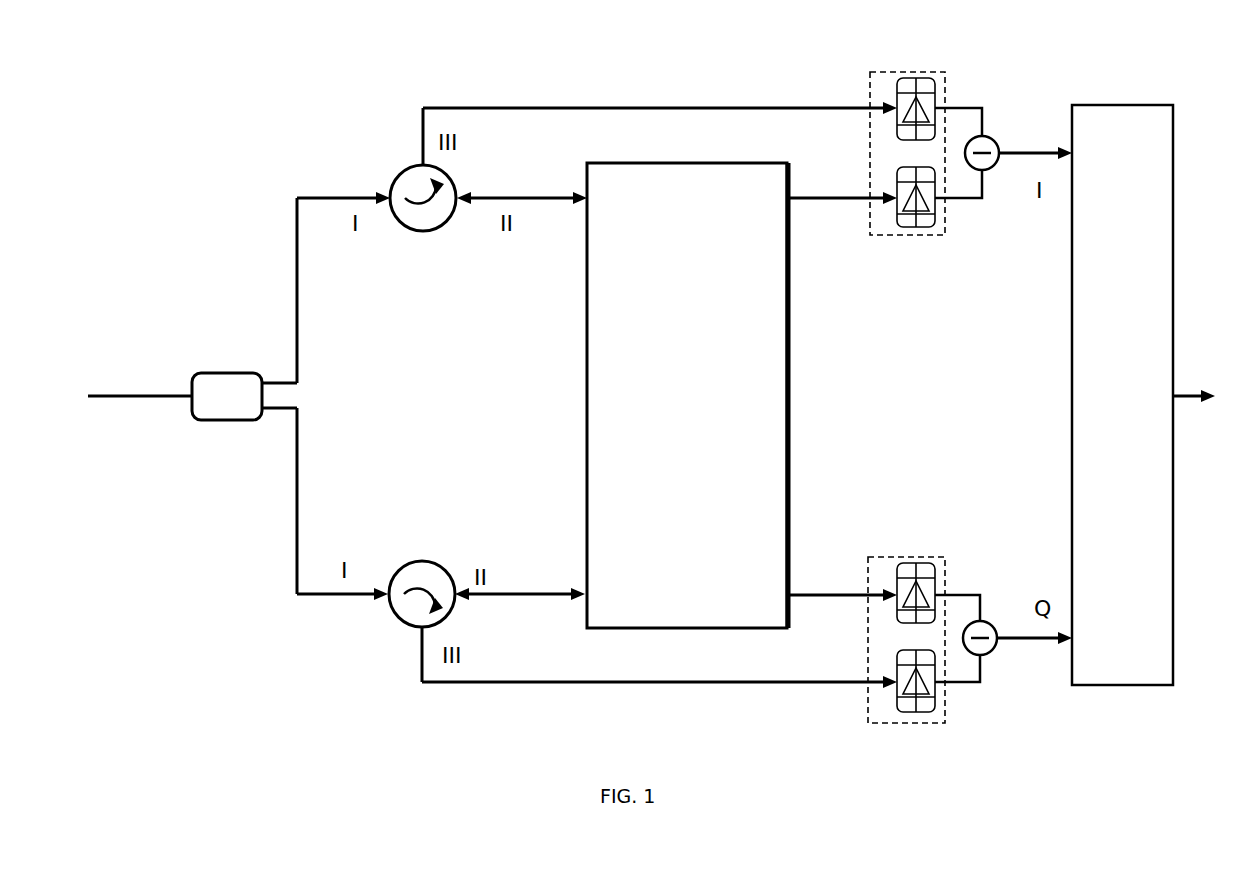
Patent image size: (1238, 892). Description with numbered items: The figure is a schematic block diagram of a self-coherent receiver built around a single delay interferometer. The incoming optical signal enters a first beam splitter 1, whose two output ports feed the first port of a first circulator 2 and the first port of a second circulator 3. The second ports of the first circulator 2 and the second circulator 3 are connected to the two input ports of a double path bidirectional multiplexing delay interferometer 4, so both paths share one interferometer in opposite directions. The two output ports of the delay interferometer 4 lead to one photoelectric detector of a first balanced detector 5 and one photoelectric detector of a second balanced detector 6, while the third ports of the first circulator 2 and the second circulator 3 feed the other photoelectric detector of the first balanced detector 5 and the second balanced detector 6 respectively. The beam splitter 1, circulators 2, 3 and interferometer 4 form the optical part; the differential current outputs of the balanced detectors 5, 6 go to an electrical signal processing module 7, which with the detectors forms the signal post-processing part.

The first beam splitter 1 is at (206, 425).
The first circulator 2 is at (388, 155).
The second circulator 3 is at (387, 614).
The double path bidirectional multiplexing delay interferometer 4 is at (645, 395).
The first balanced detector 5 is at (947, 179).
The second balanced detector 6 is at (946, 591).
The electrical signal processing module 7 is at (1083, 395).